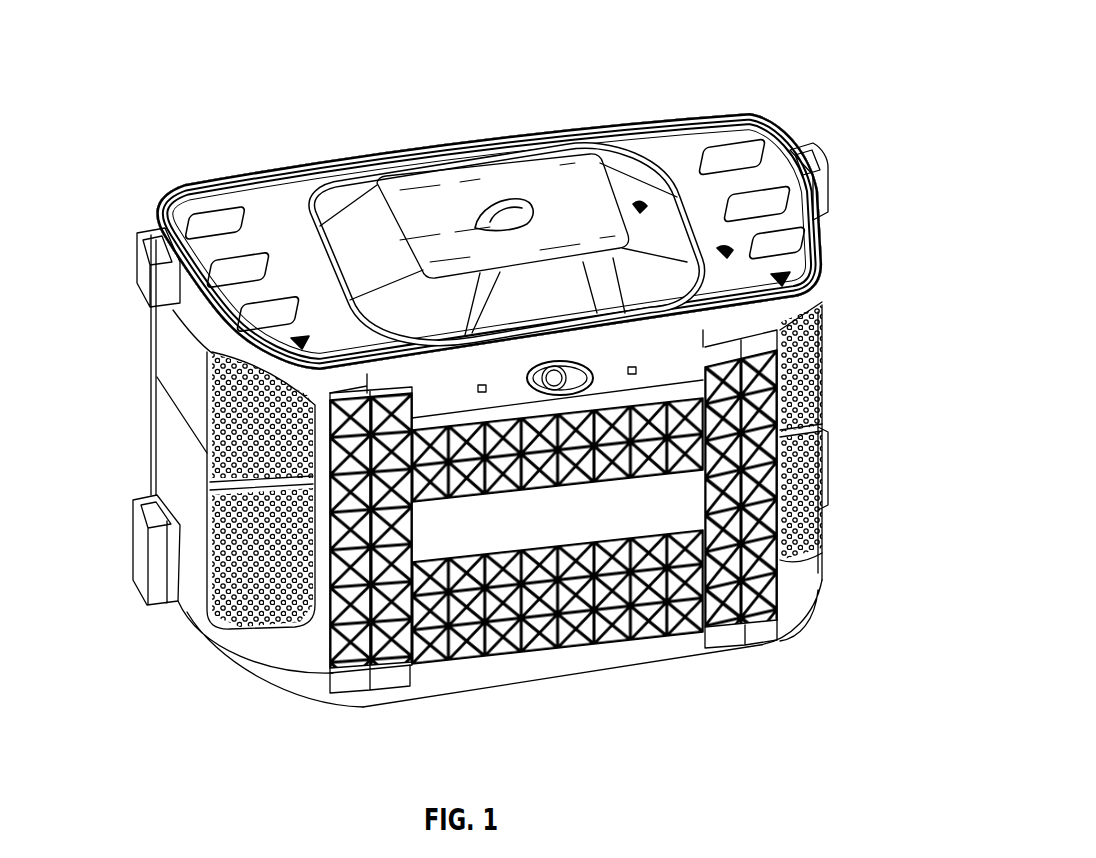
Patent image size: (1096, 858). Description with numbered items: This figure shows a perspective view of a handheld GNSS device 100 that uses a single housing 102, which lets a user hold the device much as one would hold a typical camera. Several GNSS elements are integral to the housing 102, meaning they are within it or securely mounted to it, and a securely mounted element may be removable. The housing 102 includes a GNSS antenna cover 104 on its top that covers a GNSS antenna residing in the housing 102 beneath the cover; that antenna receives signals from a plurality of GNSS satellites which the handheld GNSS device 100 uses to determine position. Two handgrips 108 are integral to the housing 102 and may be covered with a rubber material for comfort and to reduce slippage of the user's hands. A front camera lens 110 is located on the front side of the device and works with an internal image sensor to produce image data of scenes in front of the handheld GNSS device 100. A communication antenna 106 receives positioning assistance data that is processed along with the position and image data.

The handheld GNSS device 100 is at (471, 395).
The housing 102 is at (167, 353).
The GNSS antenna cover 104 is at (458, 184).
The communication antenna 106 is at (748, 633).
The handgrip 108 is at (815, 373).
The front camera lens 110 is at (587, 383).